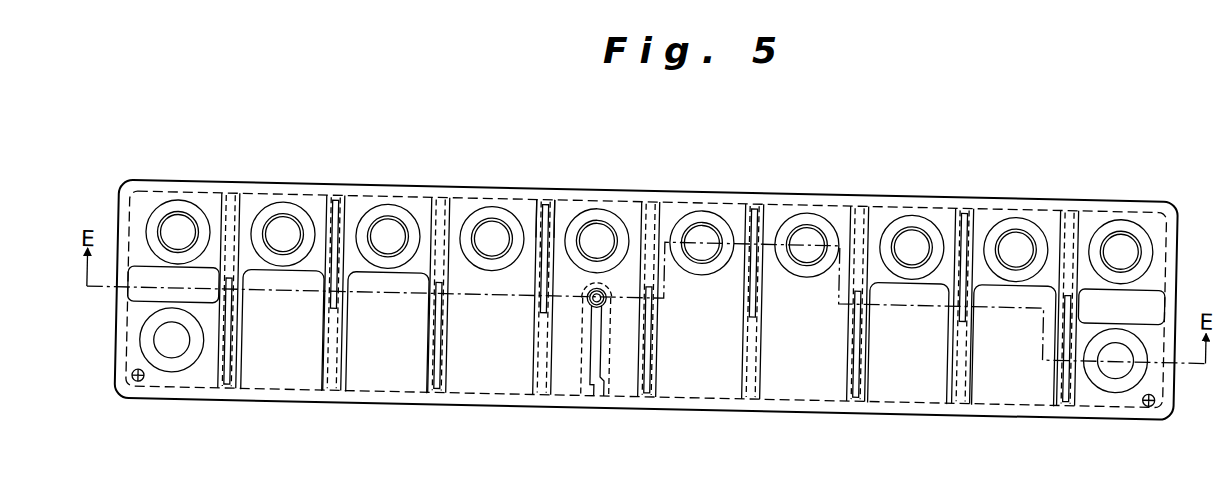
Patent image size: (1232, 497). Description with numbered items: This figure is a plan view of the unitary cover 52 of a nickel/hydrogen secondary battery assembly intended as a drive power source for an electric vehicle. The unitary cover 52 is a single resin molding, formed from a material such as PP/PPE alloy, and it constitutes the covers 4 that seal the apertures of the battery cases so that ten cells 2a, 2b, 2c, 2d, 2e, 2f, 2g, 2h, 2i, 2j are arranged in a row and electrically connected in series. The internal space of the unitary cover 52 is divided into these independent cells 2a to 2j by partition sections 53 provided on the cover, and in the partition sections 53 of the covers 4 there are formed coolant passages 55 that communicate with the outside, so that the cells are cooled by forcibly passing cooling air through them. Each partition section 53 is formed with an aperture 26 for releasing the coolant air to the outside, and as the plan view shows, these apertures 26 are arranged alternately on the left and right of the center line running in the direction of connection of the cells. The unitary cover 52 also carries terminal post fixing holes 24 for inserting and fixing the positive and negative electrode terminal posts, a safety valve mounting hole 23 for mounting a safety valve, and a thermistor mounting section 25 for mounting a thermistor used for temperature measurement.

The cell 2a is at (186, 180).
The cell 2b is at (274, 182).
The cell 2c is at (394, 184).
The cell 2d is at (486, 186).
The cell 2e is at (592, 188).
The cell 2f is at (697, 190).
The cell 2g is at (787, 192).
The cell 2h is at (906, 196).
The cell 2i is at (1010, 199).
The cell 2j is at (1120, 201).
The cover 4 is at (968, 198).
The safety valve mounting hole 23 is at (178, 230).
The terminal post fixing hole 24 is at (180, 348).
The thermistor mounting section 25 is at (596, 302).
The aperture 26 is at (332, 214).
The unitary cover 52 is at (547, 186).
The partition section 53 is at (768, 348).
The coolant passage 55 is at (858, 340).